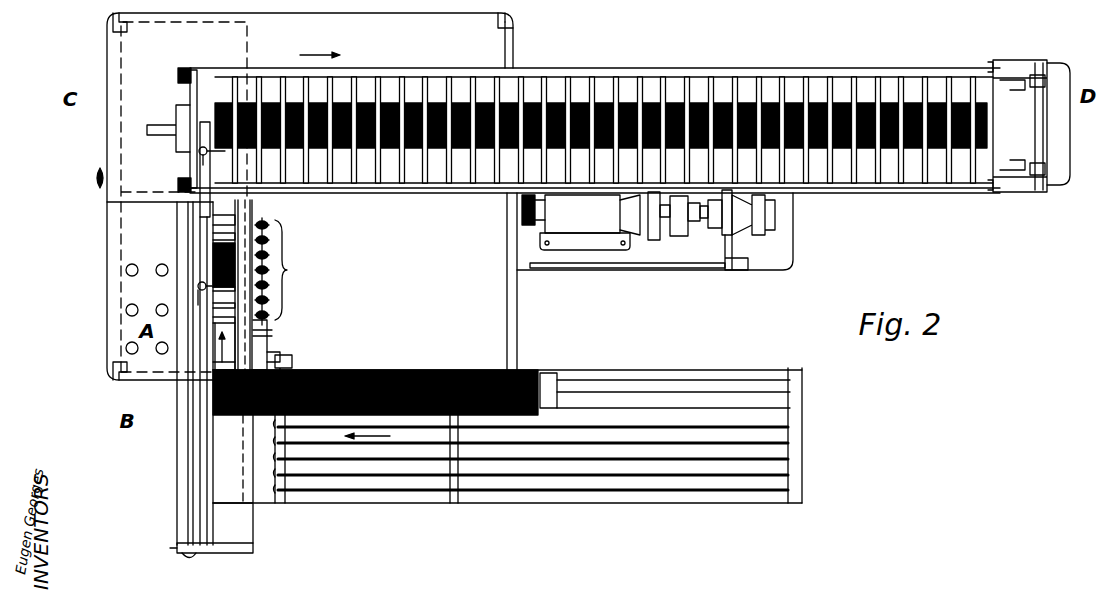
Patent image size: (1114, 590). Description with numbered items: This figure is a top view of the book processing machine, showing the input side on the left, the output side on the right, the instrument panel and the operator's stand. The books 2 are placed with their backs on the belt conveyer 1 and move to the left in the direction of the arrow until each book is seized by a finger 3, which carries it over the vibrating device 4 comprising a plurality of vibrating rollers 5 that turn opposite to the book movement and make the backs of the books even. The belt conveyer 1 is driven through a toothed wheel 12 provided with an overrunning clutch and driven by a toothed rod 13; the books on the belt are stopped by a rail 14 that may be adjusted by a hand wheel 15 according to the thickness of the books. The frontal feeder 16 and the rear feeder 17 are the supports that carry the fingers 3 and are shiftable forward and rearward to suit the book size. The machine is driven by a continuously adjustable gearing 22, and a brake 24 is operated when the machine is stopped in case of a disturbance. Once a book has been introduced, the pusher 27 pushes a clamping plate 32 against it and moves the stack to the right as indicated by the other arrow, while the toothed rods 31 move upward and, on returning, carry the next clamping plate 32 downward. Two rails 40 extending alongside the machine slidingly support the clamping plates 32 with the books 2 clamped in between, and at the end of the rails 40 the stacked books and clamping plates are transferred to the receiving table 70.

The belt conveyer 1 is at (645, 472).
The books 2 is at (224, 103).
The finger 3 is at (225, 152).
The vibrating device 4 is at (277, 294).
The vibrating rollers 5 is at (214, 348).
The toothed wheel 12 is at (292, 358).
The toothed rod 13 is at (271, 356).
The rail 14 is at (212, 198).
The hand wheel 15 is at (182, 556).
The frontal feeder 16 is at (200, 176).
The rear feeder 17 is at (215, 330).
The continuously adjustable gearing 22 is at (655, 231).
The brake 24 is at (668, 226).
The pusher 27 is at (178, 120).
The toothed rod 31 is at (178, 74).
The clamping plate 32 is at (195, 100).
The rails 40 is at (437, 75).
The receiving table 70 is at (1053, 170).